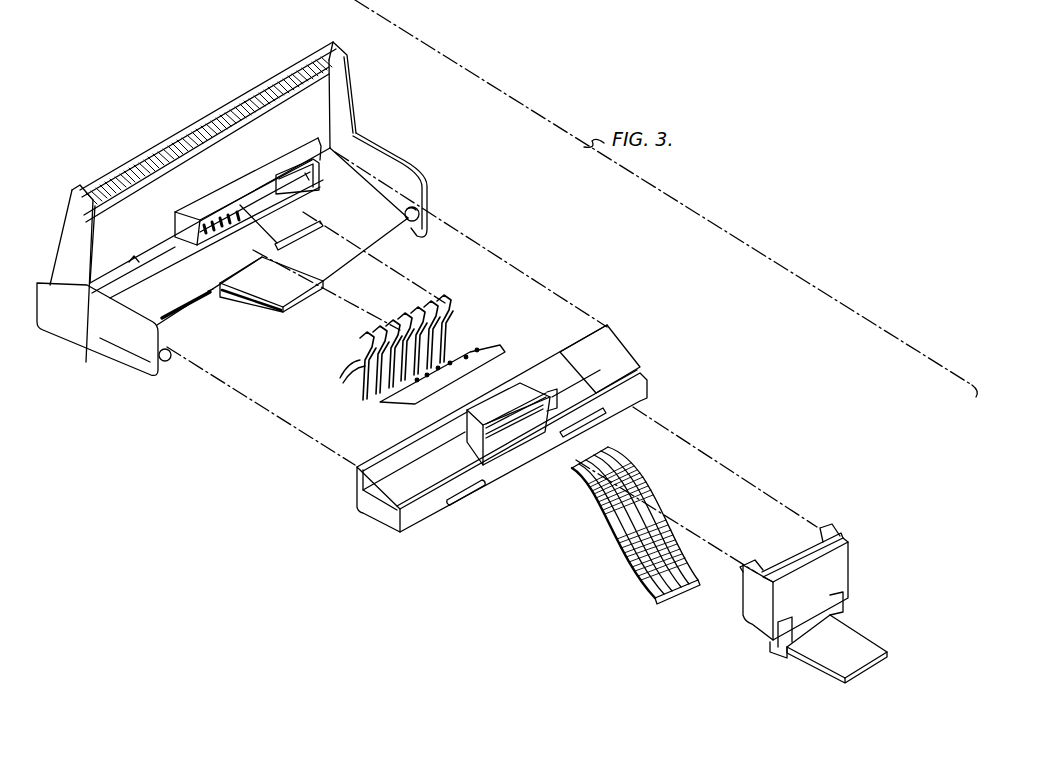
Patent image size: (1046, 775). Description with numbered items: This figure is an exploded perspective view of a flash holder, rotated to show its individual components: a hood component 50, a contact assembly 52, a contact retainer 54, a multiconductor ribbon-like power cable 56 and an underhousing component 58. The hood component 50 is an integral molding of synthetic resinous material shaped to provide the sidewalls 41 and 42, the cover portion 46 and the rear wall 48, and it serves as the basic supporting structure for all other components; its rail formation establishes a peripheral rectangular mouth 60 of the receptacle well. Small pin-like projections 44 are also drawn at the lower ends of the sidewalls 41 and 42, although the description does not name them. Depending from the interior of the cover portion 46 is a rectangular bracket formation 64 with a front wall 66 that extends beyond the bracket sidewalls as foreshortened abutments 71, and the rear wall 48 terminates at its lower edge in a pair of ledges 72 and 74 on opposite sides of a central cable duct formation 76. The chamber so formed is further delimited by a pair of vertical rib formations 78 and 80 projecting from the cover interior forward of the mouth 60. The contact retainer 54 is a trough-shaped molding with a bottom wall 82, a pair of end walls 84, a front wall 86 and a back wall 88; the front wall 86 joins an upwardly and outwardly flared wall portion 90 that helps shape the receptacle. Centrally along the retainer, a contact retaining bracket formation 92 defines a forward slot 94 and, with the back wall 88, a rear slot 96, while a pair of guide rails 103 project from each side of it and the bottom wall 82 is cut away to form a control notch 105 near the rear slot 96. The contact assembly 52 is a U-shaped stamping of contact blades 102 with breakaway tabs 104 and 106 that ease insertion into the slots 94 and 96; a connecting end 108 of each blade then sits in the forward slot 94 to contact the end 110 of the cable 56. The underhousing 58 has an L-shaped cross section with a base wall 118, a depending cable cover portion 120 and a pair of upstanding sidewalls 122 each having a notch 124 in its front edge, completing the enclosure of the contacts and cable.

The sidewall 41 is at (122, 357).
The sidewall 42 is at (395, 170).
The pins 44 is at (168, 365).
The cover portion 46 is at (65, 193).
The rear wall 48 is at (50, 335).
The hood component 50 is at (220, 308).
The contact assembly 52 is at (433, 300).
The contact retainer 54 is at (438, 532).
The power cable 56 is at (627, 540).
The underhousing component 58 is at (788, 553).
The peripheral rectangular mouth 60 is at (321, 181).
The rectangular bracket formation 64 is at (236, 172).
The front wall 66 is at (256, 190).
The foreshortened abutments 71 is at (176, 216).
The ledge 72 is at (204, 294).
The ledge 74 is at (302, 246).
The cable duct formation 76 is at (263, 298).
The vertical rib formation 78 is at (135, 257).
The vertical rib formation 80 is at (279, 176).
The bottom wall 82 is at (412, 525).
The end walls 84 is at (372, 510).
The front wall 86 is at (643, 372).
The back wall 88 is at (640, 408).
The flared wall portion 90 is at (615, 352).
The contact retaining bracket formation 92 is at (516, 366).
The forward slot 94 is at (548, 391).
The rear slot 96 is at (508, 467).
The contact blades 102 is at (340, 378).
The guide rails 103 is at (468, 440).
The breakaway tab 104 is at (480, 344).
The control notch 105 is at (560, 440).
The breakaway tab 106 is at (395, 404).
The connecting end 108 is at (462, 322).
The cable end 110 is at (577, 473).
The base wall 118 is at (845, 571).
The cable cover portion 120 is at (850, 667).
The upstanding sidewalls 122 is at (749, 620).
The notch 124 is at (832, 528).